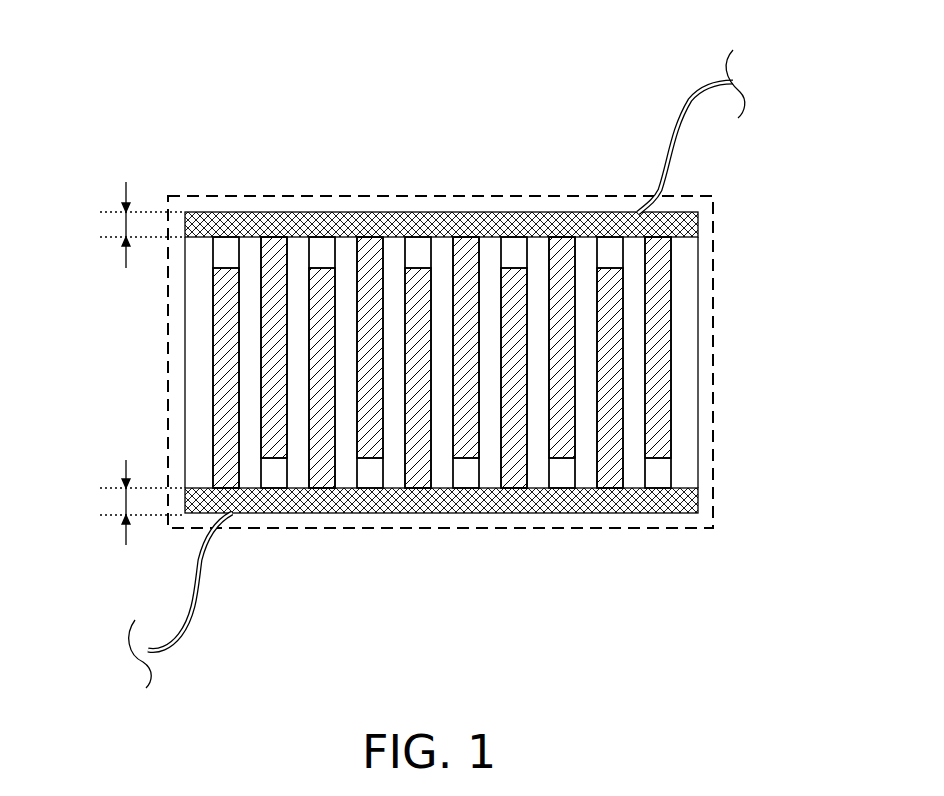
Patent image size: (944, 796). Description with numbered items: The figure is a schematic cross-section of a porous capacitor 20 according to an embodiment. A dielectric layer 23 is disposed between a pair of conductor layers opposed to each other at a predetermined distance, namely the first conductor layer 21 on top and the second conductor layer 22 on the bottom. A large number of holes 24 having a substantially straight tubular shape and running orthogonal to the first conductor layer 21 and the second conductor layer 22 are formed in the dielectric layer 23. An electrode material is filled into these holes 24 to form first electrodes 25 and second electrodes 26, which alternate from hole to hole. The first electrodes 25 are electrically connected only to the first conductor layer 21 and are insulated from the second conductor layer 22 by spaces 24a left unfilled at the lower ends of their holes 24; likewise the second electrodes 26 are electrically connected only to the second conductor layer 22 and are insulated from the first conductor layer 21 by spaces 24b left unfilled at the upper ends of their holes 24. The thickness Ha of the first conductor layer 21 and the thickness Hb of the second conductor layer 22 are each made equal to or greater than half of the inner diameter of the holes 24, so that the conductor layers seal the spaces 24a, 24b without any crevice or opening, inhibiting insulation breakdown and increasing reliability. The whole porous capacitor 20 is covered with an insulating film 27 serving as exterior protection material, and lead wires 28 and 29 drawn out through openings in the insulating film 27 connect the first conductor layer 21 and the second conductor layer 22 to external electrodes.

The porous capacitor 20 is at (764, 100).
The first conductor layer 21 is at (698, 222).
The second conductor layer 22 is at (700, 500).
The dielectric layer 23 is at (697, 327).
The holes 24 is at (219, 370).
The spaces 24a is at (275, 478).
The spaces 24b is at (229, 250).
The first electrodes 25 is at (273, 297).
The second electrodes 26 is at (223, 298).
The insulating film 27 is at (713, 385).
The lead wire 28 is at (702, 85).
The lead wire 29 is at (188, 614).
The thickness of the first conductor layer Ha is at (124, 229).
The thickness of the second conductor layer Hb is at (124, 503).